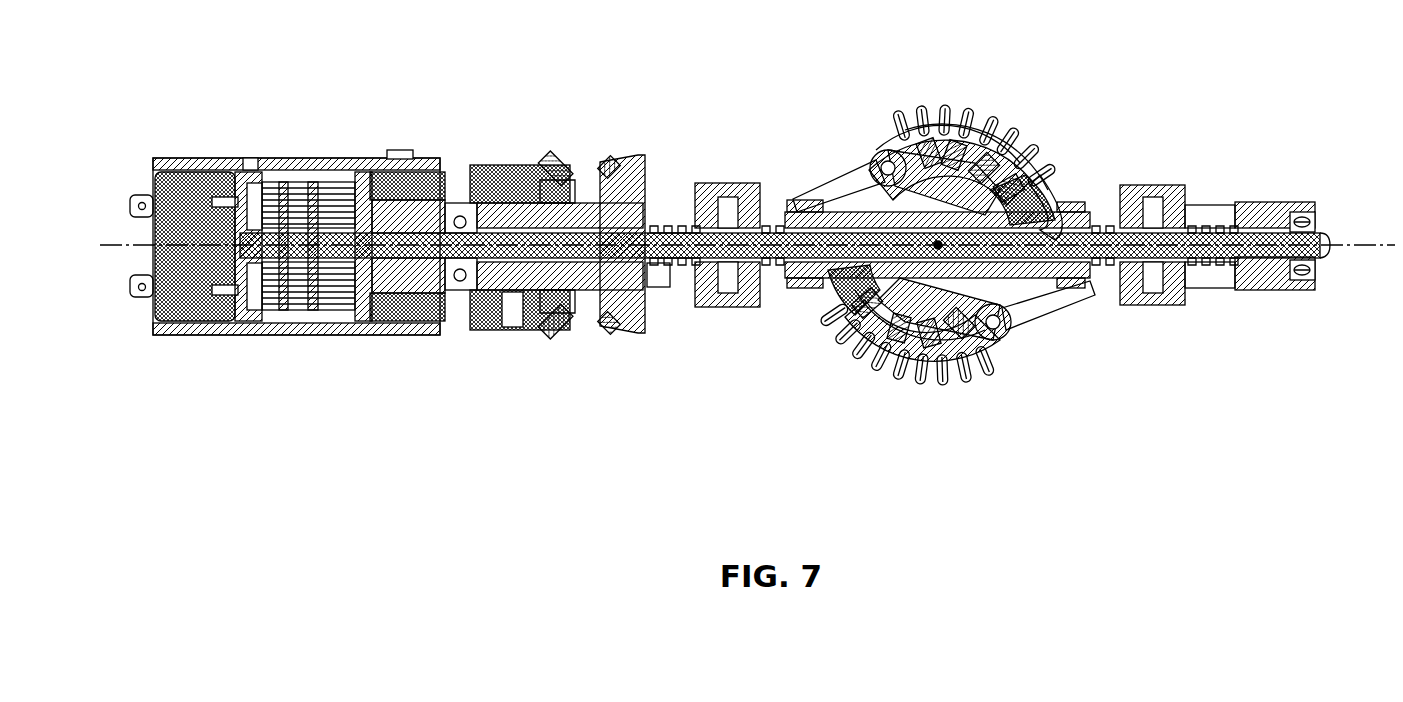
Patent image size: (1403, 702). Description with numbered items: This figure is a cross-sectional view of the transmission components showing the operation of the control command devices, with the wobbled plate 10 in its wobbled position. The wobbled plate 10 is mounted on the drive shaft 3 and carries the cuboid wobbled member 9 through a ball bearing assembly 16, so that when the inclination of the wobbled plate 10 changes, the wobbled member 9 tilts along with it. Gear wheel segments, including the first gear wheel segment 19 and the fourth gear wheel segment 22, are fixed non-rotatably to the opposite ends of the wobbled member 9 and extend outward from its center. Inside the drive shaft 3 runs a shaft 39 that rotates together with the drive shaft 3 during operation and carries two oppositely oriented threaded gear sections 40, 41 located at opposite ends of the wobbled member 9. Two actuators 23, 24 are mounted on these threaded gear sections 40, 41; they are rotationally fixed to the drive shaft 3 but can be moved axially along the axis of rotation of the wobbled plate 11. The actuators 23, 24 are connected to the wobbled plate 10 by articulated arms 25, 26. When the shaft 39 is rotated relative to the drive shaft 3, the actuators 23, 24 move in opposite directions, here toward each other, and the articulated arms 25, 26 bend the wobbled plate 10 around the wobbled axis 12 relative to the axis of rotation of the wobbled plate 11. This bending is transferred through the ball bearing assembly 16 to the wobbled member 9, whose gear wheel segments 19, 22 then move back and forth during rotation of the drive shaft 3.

The drive shaft 3 is at (1268, 215).
The wobbled member 9 is at (935, 110).
The wobbled plate 10 is at (1050, 196).
The axis of rotation of the wobbled plate 11 is at (1381, 258).
The wobbled axis 12 is at (943, 373).
The ball bearing assembly 16 is at (963, 125).
The first gear wheel segment 19 is at (1000, 120).
The fourth gear wheel segment 22 is at (858, 358).
The first actuator 23 is at (708, 183).
The second actuator 24 is at (1172, 205).
The first articulated arm 25 is at (831, 195).
The second articulated arm 26 is at (1042, 300).
The shaft 39 is at (1247, 247).
The first threaded gear section 40 is at (665, 270).
The second threaded gear section 41 is at (1203, 265).